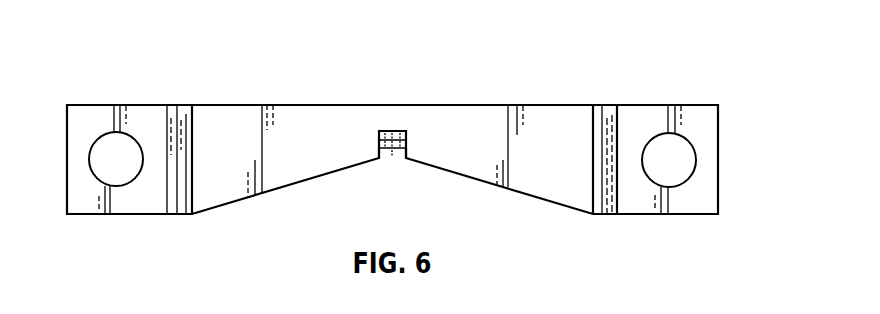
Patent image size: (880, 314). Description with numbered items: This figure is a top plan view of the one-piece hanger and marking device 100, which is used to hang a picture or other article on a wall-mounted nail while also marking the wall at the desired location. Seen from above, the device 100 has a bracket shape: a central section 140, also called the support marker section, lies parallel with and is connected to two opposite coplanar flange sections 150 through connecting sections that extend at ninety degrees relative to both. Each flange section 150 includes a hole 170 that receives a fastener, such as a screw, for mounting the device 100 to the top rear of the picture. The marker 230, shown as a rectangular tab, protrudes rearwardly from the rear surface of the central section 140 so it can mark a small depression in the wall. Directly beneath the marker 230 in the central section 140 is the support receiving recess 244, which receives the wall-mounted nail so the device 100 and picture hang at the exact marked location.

The one-piece hanger and marking device 100 is at (104, 64).
The central section 140 is at (537, 104).
The flange sections 150 is at (654, 104).
The holes 170 is at (680, 157).
The support marker 230 is at (408, 137).
The support receiving recess 244 is at (392, 160).